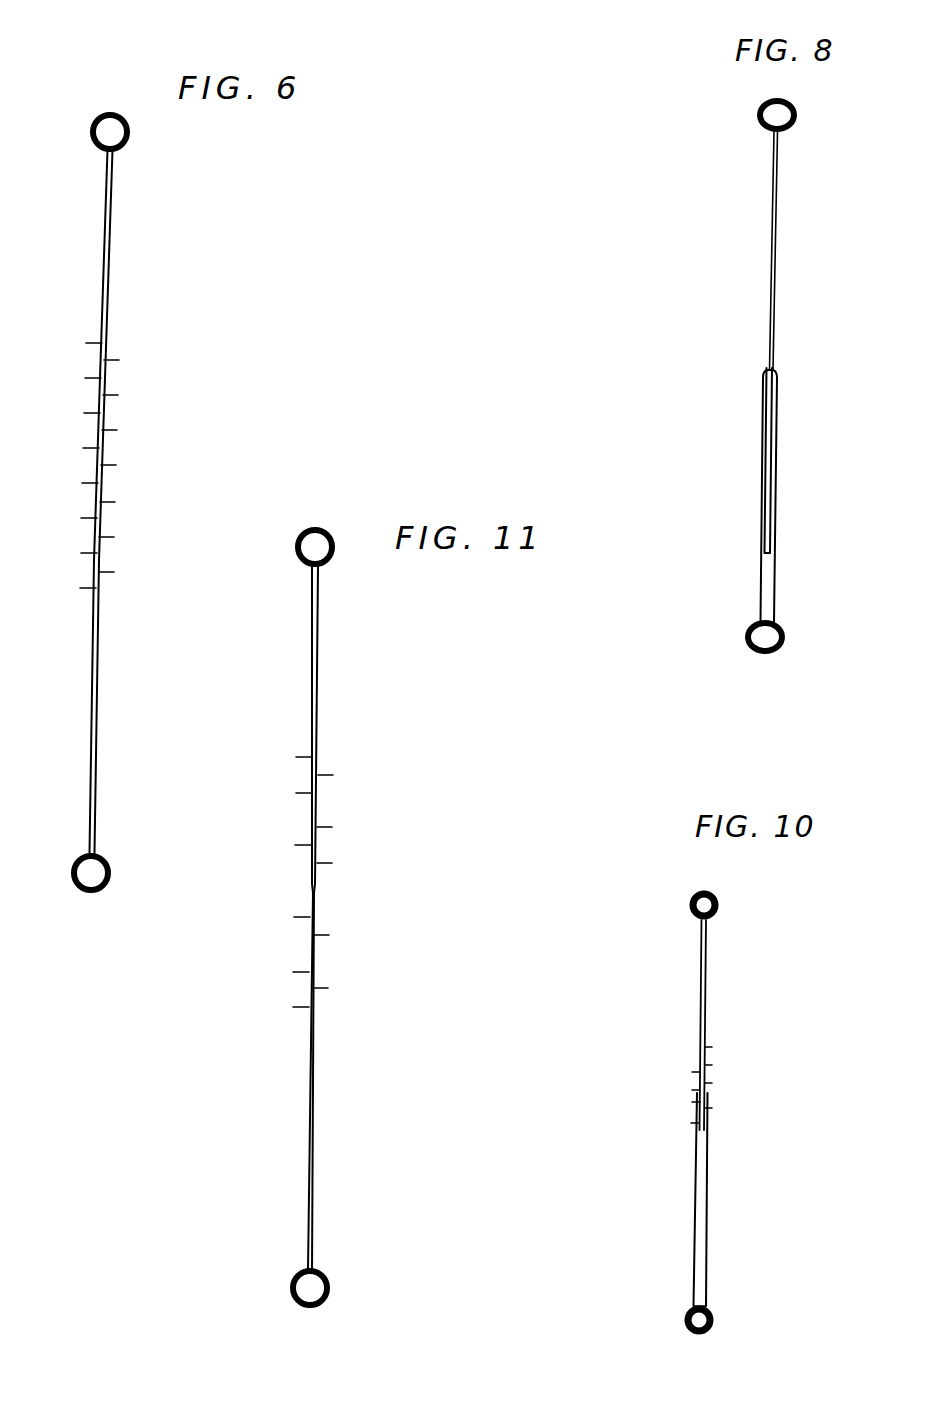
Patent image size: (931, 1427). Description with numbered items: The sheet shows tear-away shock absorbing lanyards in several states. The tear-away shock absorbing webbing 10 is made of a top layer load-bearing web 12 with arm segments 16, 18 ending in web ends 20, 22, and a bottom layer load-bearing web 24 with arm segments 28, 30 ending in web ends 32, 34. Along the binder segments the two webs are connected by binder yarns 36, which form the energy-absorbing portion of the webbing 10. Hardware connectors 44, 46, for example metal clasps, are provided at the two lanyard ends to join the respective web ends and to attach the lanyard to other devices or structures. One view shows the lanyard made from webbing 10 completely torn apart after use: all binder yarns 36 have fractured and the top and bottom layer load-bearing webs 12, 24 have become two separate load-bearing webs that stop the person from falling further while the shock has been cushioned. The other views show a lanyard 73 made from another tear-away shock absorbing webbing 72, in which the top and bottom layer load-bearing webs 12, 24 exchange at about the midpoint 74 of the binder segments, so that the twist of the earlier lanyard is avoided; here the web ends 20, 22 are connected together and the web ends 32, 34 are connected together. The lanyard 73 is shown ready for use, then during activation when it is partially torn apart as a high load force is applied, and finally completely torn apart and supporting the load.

In FIG. 6, the tear-away shock absorbing webbing 10 is at (256, 178).
In FIG. 6, the top layer load-bearing web 12 is at (109, 290).
In FIG. 11, the top layer load-bearing web 12 is at (320, 700).
In FIG. 8, the top layer load-bearing web 12 is at (776, 222).
In FIG. 10, the top layer load-bearing web 12 is at (707, 986).
In FIG. 6, the arm segment 16 is at (112, 196).
In FIG. 6, the arm segment 18 is at (97, 712).
In FIG. 8, the web end 20 is at (780, 137).
In FIG. 10, the web end 20 is at (710, 933).
In FIG. 8, the web end 22 is at (770, 136).
In FIG. 10, the web end 22 is at (700, 934).
In FIG. 6, the bottom layer load-bearing web 24 is at (102, 316).
In FIG. 11, the bottom layer load-bearing web 24 is at (312, 708).
In FIG. 8, the bottom layer load-bearing web 24 is at (772, 224).
In FIG. 10, the bottom layer load-bearing web 24 is at (701, 1010).
In FIG. 6, the arm segment 28 is at (91, 750).
In FIG. 6, the arm segment 30 is at (106, 210).
In FIG. 8, the web end 32 is at (776, 612).
In FIG. 10, the web end 32 is at (708, 1290).
In FIG. 8, the web end 34 is at (760, 616).
In FIG. 10, the web end 34 is at (693, 1297).
In FIG. 6, the binder yarns 36 is at (114, 358).
In FIG. 11, the binder yarns 36 is at (322, 775).
In FIG. 8, the binder yarns 36 is at (773, 450).
In FIG. 10, the binder yarns 36 is at (709, 1065).
In FIG. 6, the hardware connector 44 is at (108, 113).
In FIG. 11, the hardware connector 44 is at (306, 528).
In FIG. 8, the hardware connector 44 is at (794, 106).
In FIG. 10, the hardware connector 44 is at (716, 902).
In FIG. 6, the hardware connector 46 is at (84, 890).
In FIG. 11, the hardware connector 46 is at (310, 1308).
In FIG. 8, the hardware connector 46 is at (758, 655).
In FIG. 10, the hardware connector 46 is at (708, 1332).
In FIG. 11, the tear-away shock absorbing webbing 72 is at (410, 622).
In FIG. 8, the tear-away shock absorbing webbing 72 is at (680, 312).
In FIG. 10, the tear-away shock absorbing webbing 72 is at (628, 1111).
In FIG. 8, the lanyard 73 is at (680, 112).
In FIG. 10, the lanyard 73 is at (657, 960).
In FIG. 11, the midpoint 74 is at (266, 902).